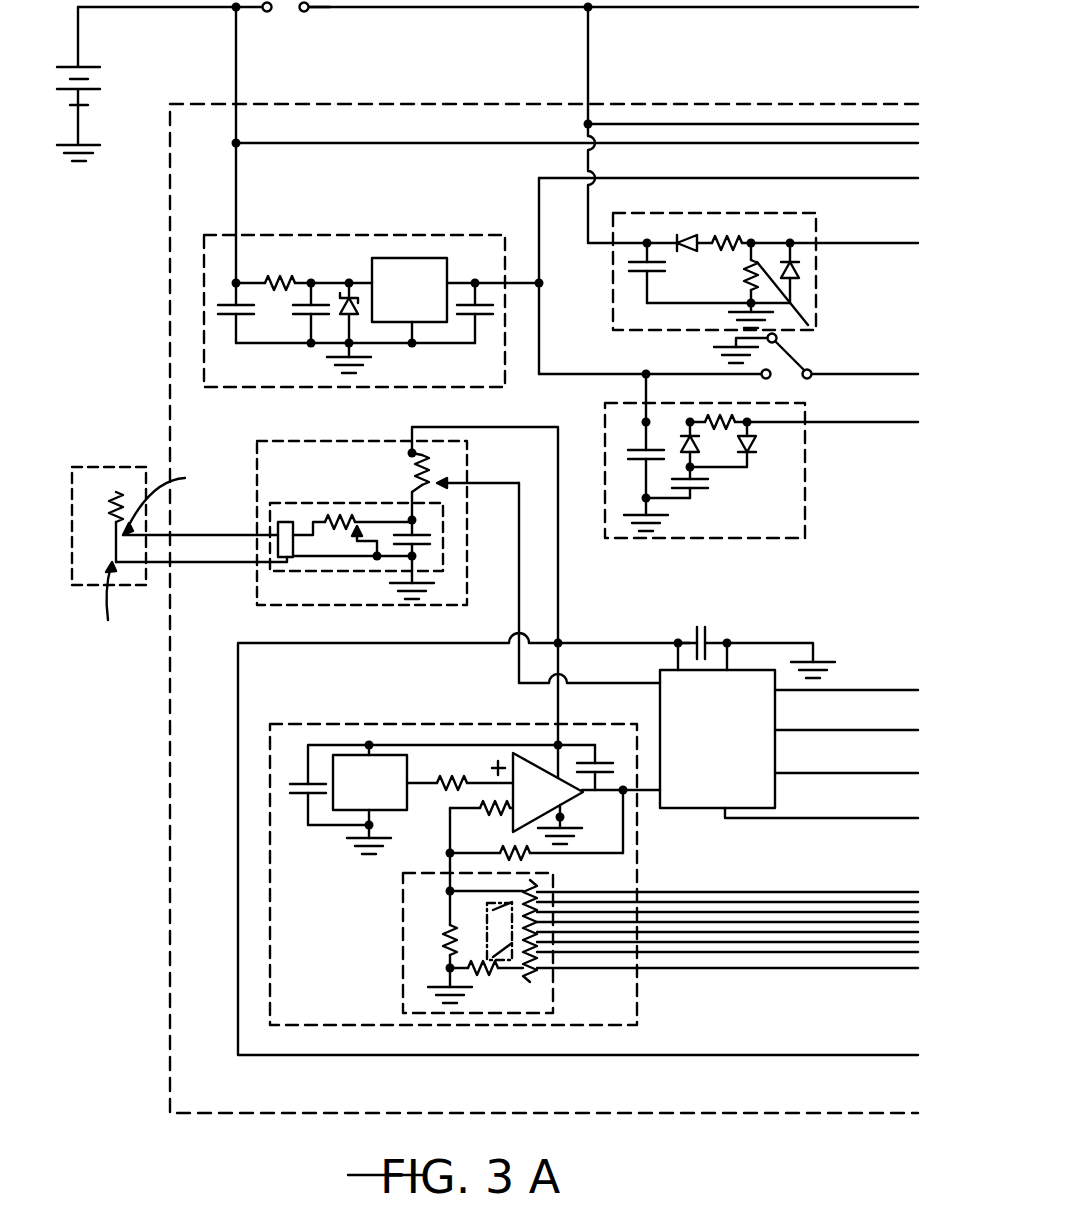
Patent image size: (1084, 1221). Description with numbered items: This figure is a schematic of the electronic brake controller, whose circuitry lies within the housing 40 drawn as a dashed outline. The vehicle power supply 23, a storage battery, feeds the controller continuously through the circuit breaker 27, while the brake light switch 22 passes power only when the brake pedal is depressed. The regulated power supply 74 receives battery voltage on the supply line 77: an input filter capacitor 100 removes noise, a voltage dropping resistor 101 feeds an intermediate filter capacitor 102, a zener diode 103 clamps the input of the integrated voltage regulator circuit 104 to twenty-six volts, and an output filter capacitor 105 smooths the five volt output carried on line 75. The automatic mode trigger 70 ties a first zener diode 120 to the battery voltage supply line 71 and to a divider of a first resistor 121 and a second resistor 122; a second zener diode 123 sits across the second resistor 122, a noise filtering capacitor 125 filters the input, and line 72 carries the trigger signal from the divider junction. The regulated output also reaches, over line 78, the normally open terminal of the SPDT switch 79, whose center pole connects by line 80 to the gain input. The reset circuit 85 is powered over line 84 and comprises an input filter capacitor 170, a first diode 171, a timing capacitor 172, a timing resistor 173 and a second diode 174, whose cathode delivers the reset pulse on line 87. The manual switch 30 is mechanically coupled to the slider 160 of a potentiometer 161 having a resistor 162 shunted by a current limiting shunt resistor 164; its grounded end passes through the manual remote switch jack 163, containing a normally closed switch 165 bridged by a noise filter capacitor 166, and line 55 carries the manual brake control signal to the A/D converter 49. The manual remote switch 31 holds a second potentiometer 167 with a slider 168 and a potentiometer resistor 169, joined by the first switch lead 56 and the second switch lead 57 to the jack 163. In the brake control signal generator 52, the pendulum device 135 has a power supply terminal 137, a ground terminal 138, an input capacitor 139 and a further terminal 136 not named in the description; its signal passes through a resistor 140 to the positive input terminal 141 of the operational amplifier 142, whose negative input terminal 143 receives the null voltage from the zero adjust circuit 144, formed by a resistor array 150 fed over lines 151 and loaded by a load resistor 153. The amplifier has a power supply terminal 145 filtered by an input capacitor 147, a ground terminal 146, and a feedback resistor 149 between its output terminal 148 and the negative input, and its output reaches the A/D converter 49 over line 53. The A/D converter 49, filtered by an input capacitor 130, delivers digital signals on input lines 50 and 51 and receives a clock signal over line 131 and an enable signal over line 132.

The vehicle power supply 23 is at (100, 67).
The circuit breaker 27 is at (236, 62).
The brake light switch 22 is at (282, 2).
The housing 40 is at (381, 104).
The supply line 77 is at (240, 183).
The regulated power supply 74 is at (355, 233).
The integrated voltage regulator circuit 104 is at (417, 256).
The voltage dropping resistor 101 is at (285, 280).
The input filter capacitor 100 is at (218, 312).
The intermediate filter capacitor 102 is at (305, 314).
The zener diode 103 is at (360, 320).
The output filter capacitor 105 is at (483, 316).
The battery voltage supply line 71 is at (590, 202).
The line 75 is at (692, 178).
The automatic mode trigger 70 is at (780, 213).
The first zener diode 120 is at (690, 235).
The first resistor 121 is at (742, 238).
The line 72 is at (860, 222).
The noise filtering capacitor 125 is at (662, 270).
The second resistor 122 is at (812, 320).
The second zener diode 123 is at (815, 283).
The line 78 is at (603, 378).
The single pole double throw switch 79 is at (790, 357).
The line 80 is at (872, 348).
The line 84 is at (645, 393).
The reset circuit 85 is at (808, 518).
The timing resistor 173 is at (740, 412).
The second diode 174 is at (757, 440).
The line 87 is at (876, 424).
The first diode 171 is at (700, 447).
The timing capacitor 172 is at (697, 490).
The input filter capacitor 170 is at (640, 488).
The manual remote switch 31 is at (98, 466).
The potentiometer resistor 169 is at (113, 503).
The slider 168 is at (179, 497).
The first switch lead 56 is at (189, 535).
The second switch lead 57 is at (186, 565).
The second potentiometer 167 is at (104, 612).
The manual switch 30 is at (465, 565).
The manual remote switch jack 163 is at (290, 503).
The normally closed switch 165 is at (322, 535).
The current limiting shunt resistor 164 is at (407, 478).
The potentiometer 161 is at (448, 472).
The slider 160 is at (443, 489).
The resistor 162 is at (438, 505).
The noise filter capacitor 166 is at (420, 545).
The line 55 is at (521, 574).
The power supply terminal 145 is at (547, 777).
The input capacitor 130 is at (708, 640).
The input line 51 is at (862, 690).
The A/D converter 49 is at (731, 733).
The line 131 is at (823, 710).
The input line 50 is at (832, 752).
The line 132 is at (820, 820).
The line 53 is at (583, 724).
The input capacitor 147 is at (612, 748).
The output terminal 148 is at (632, 830).
The power supply terminal 137 is at (357, 755).
The pendulum device 135 is at (327, 763).
The input capacitor 139 is at (296, 790).
The ground terminal 138 is at (363, 815).
The conductor 136 is at (418, 770).
The resistor 140 is at (437, 780).
The positive input terminal 141 is at (510, 791).
The operational amplifier 142 is at (548, 798).
The negative input terminal 143 is at (512, 815).
The ground terminal 146 is at (592, 818).
The feedback resistor 149 is at (424, 849).
The brake control signal generator 52 is at (418, 724).
The resistor array 150 is at (556, 995).
The load resistor 153 is at (445, 944).
The zero adjust circuit 144 is at (404, 903).
The lines 151 is at (718, 878).